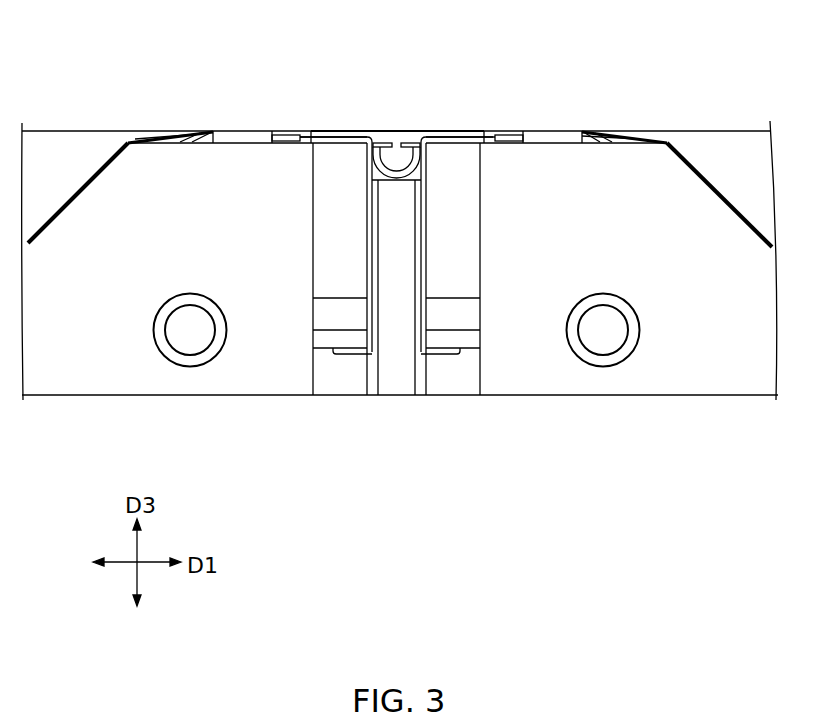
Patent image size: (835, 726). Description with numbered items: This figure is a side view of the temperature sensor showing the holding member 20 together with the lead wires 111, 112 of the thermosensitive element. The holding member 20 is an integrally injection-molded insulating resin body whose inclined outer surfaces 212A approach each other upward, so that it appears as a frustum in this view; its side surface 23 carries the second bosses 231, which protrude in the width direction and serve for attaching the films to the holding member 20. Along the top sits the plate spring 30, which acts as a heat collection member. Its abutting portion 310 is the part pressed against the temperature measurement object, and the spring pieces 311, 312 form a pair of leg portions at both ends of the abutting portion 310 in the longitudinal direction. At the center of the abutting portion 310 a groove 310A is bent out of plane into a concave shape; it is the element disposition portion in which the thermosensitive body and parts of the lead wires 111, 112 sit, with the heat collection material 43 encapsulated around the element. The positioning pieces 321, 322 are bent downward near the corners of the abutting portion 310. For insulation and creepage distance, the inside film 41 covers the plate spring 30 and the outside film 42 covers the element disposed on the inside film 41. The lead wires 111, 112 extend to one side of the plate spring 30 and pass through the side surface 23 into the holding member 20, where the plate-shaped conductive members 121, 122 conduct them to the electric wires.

The holding member 20 is at (678, 144).
The side surface 23 is at (256, 252).
The outer surface 212A is at (66, 202).
The second boss 231 is at (163, 331).
The plate spring 30 is at (508, 131).
The abutting portion 310 is at (310, 130).
The groove 310A is at (388, 140).
The heat collection material 43 is at (410, 130).
The lead wire 112 is at (362, 207).
The lead wire 111 is at (433, 207).
The conductive member 122 is at (333, 357).
The conductive member 121 is at (460, 357).
The spring piece 312 is at (193, 130).
The positioning piece 322 is at (233, 130).
The positioning piece 321 is at (545, 130).
The spring piece 311 is at (598, 130).
The inside film 41 is at (155, 130).
The outside film 42 is at (95, 130).